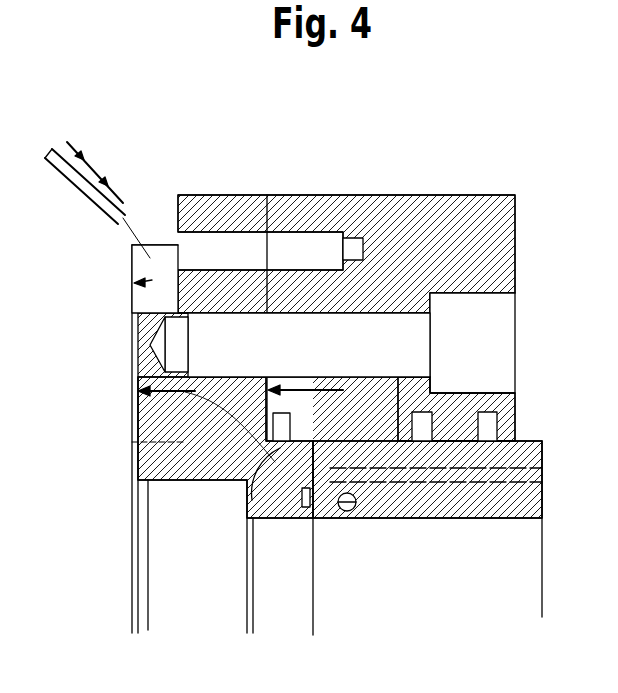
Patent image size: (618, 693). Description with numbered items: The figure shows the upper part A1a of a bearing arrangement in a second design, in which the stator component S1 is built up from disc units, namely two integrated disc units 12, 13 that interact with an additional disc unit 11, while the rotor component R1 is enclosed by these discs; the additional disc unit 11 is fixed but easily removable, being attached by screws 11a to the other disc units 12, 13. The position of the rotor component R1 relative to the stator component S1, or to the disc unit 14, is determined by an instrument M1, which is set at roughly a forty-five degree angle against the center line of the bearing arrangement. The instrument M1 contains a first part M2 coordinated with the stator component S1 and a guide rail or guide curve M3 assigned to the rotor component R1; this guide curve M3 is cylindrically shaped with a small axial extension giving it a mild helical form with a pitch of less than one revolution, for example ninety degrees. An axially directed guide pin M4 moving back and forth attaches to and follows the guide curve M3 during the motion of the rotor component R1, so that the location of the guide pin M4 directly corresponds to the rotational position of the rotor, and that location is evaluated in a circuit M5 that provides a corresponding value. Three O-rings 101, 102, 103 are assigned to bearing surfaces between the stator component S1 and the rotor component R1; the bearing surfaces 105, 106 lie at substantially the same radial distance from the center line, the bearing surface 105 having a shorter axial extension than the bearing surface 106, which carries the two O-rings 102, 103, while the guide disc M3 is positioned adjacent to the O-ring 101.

The additional disc unit 11 is at (246, 197).
The disc unit 12 is at (346, 235).
The disc unit 13 is at (346, 235).
The screws 11a is at (488, 322).
The disc unit 14 is at (520, 533).
The O-ring 101 is at (255, 499).
The O-ring 102 is at (435, 420).
The O-ring 103 is at (492, 419).
The bearing surface 105 is at (320, 412).
The bearing surface 106 is at (452, 445).
The upper part A1a is at (355, 234).
The stator component S1 is at (490, 257).
The rotor component R1 is at (390, 507).
The instrument M1 is at (117, 300).
The first part M2 is at (123, 219).
The guide rail or guide curve M3 is at (313, 388).
The guide pin M4 is at (105, 229).
The circuit M5 is at (98, 162).